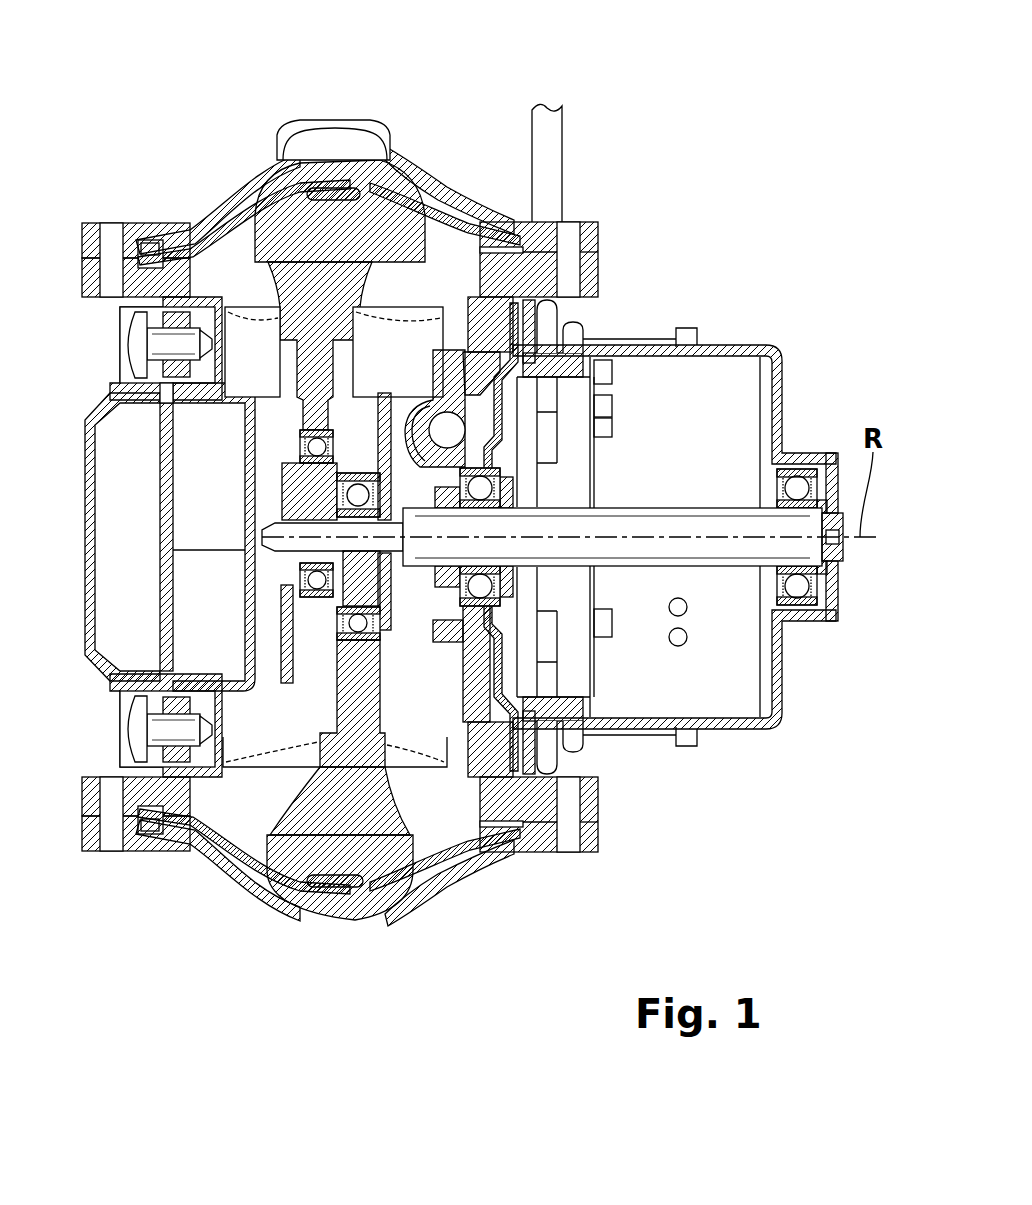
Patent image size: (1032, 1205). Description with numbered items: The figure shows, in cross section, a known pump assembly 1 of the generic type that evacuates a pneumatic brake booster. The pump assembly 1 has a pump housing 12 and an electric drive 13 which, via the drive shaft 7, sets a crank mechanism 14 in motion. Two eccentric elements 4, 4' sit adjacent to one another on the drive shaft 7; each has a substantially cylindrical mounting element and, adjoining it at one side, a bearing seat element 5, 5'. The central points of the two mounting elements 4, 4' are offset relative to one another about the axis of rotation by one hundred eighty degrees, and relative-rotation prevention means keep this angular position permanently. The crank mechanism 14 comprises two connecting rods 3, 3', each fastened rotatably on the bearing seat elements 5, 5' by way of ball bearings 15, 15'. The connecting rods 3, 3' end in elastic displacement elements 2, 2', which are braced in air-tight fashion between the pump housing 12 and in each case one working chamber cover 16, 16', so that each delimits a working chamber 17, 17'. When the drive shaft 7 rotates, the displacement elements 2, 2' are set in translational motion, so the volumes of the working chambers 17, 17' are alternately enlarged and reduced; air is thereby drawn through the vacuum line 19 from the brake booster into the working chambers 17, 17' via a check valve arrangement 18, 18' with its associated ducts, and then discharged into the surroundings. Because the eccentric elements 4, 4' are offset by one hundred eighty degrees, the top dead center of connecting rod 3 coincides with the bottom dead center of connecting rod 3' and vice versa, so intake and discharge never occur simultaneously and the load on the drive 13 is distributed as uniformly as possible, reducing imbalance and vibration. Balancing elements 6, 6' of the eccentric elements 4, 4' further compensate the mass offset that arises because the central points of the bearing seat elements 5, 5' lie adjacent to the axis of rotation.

The pump assembly 1 is at (676, 164).
The elastic displacement element 2 is at (350, 190).
The elastic displacement element 2' is at (445, 884).
The connecting rod 3 is at (334, 346).
The connecting rod 3' is at (335, 737).
The eccentric element 4 is at (269, 491).
The eccentric element 4' is at (394, 607).
The bearing seat element 5 is at (290, 478).
The bearing seat element 5' is at (372, 646).
The balancing element 6 is at (247, 634).
The balancing element 6' is at (408, 487).
The drive shaft 7 is at (300, 545).
The pump housing 12 is at (612, 266).
The electric drive 13 is at (738, 330).
The crank mechanism 14 is at (353, 424).
The ball bearing 15 is at (294, 410).
The ball bearing 15' is at (308, 644).
The working chamber cover 16 is at (325, 181).
The working chamber cover 16' is at (325, 894).
The working chamber 17 is at (329, 202).
The working chamber 17' is at (244, 882).
The check valve arrangement 18 is at (333, 89).
The check valve arrangement 18' is at (340, 928).
The vacuum line 19 is at (552, 135).